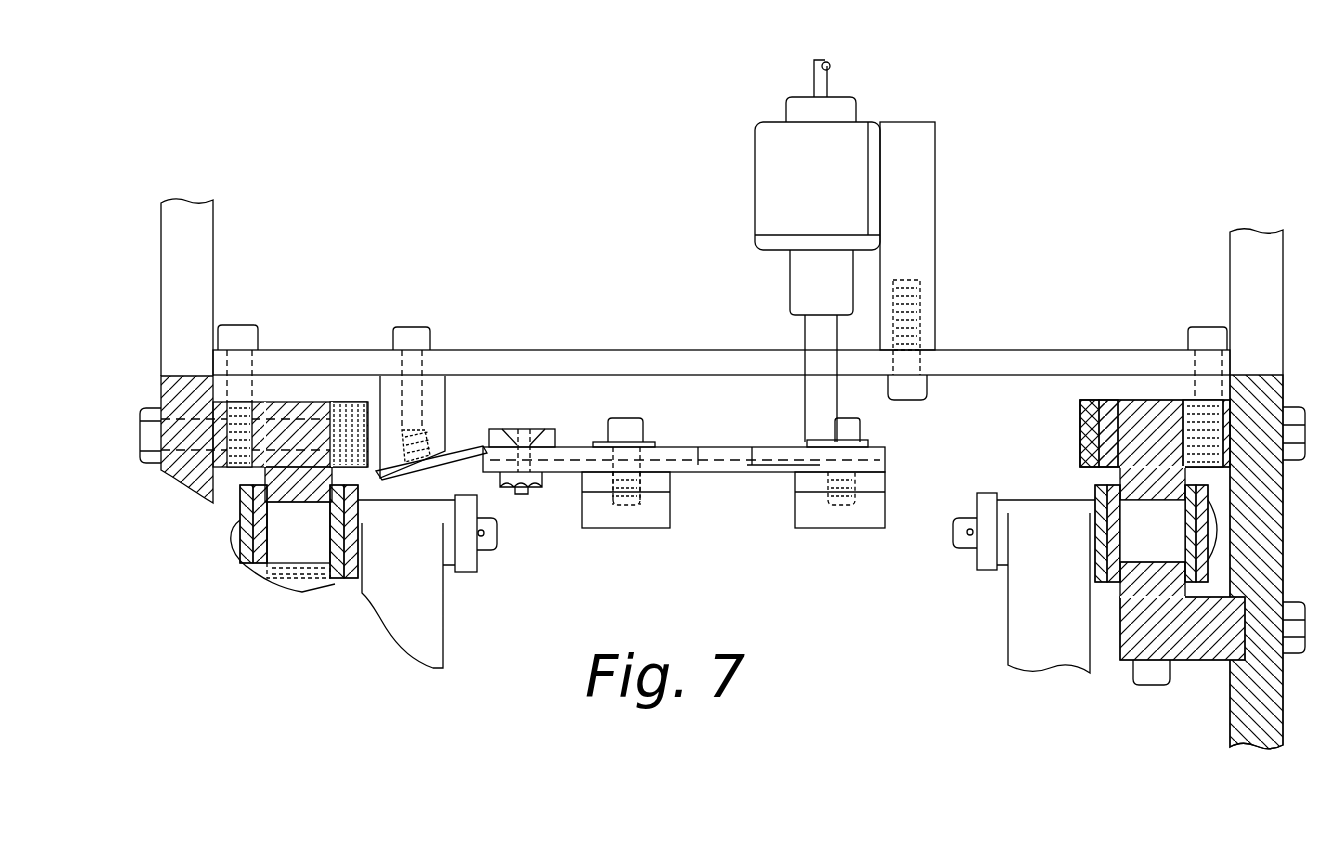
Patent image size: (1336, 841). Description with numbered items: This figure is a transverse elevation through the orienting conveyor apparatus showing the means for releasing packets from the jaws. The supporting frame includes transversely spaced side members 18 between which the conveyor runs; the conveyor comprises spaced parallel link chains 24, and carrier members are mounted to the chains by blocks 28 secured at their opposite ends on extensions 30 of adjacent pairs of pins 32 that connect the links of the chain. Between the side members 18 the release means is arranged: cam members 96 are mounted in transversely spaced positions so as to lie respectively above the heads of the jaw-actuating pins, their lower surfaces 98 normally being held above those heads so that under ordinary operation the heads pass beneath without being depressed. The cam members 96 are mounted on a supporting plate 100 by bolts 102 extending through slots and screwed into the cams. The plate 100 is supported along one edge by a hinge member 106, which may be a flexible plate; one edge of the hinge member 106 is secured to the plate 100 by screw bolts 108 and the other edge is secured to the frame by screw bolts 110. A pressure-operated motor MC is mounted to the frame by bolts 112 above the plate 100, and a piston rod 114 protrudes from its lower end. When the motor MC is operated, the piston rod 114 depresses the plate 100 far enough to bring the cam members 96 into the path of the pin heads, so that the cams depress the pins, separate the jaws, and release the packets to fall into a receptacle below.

The side members 18 is at (208, 233).
The link chains 24 is at (355, 563).
The blocks 28 is at (443, 645).
The extensions 30 is at (487, 548).
The pins 32 is at (1152, 531).
The cam members 96 is at (605, 523).
The lower surfaces 98 is at (648, 524).
The supporting plate 100 is at (727, 474).
The bolts 102 is at (641, 428).
The hinge member 106 is at (470, 441).
The screw bolts 108 is at (531, 429).
The screw bolts 110 is at (418, 481).
The bolts 112 is at (915, 301).
The piston rod 114 is at (810, 329).
The motor MC is at (757, 155).